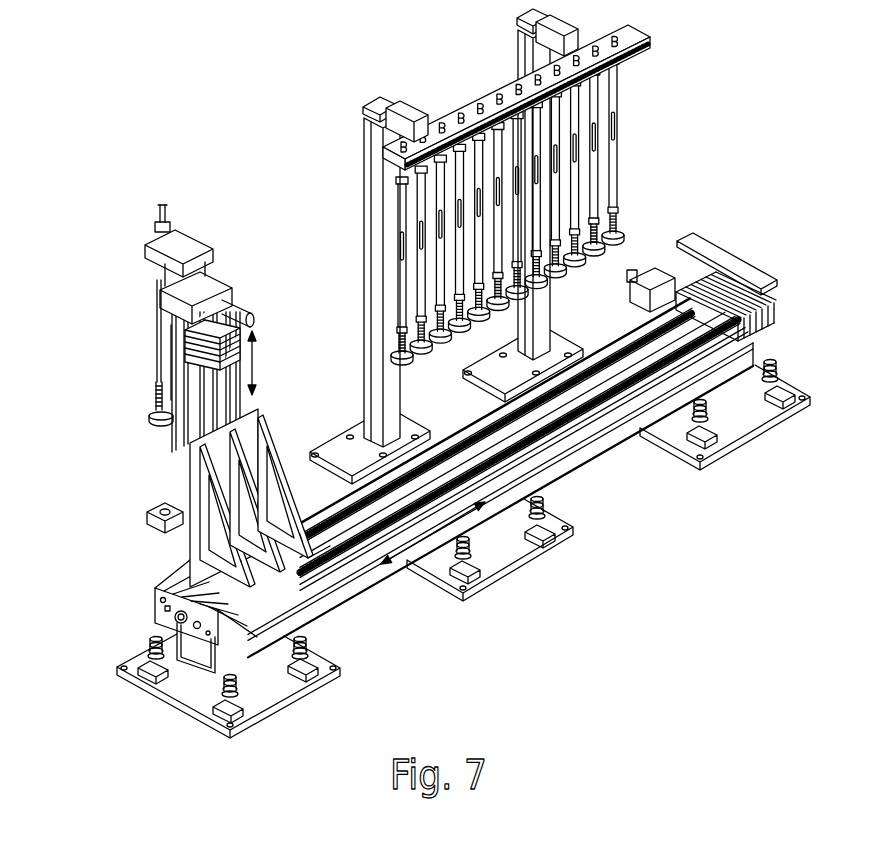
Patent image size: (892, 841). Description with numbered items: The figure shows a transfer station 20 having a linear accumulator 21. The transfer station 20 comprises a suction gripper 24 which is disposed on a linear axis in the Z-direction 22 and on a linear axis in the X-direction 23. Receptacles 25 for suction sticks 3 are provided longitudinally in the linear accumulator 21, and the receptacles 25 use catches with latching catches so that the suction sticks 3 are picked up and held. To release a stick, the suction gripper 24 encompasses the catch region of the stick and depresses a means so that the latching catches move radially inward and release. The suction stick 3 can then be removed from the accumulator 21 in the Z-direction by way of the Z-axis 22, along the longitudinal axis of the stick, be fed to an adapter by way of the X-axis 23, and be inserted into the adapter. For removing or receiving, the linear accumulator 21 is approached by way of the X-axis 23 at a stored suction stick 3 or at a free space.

The suction stick 3 is at (615, 145).
The transfer station 20 is at (434, 373).
The linear accumulator 21 is at (524, 246).
The linear axis in the Z-direction 22 is at (226, 304).
The linear axis in the X-direction 23 is at (403, 557).
The suction gripper 24 is at (192, 222).
The receptacles 25 is at (487, 85).